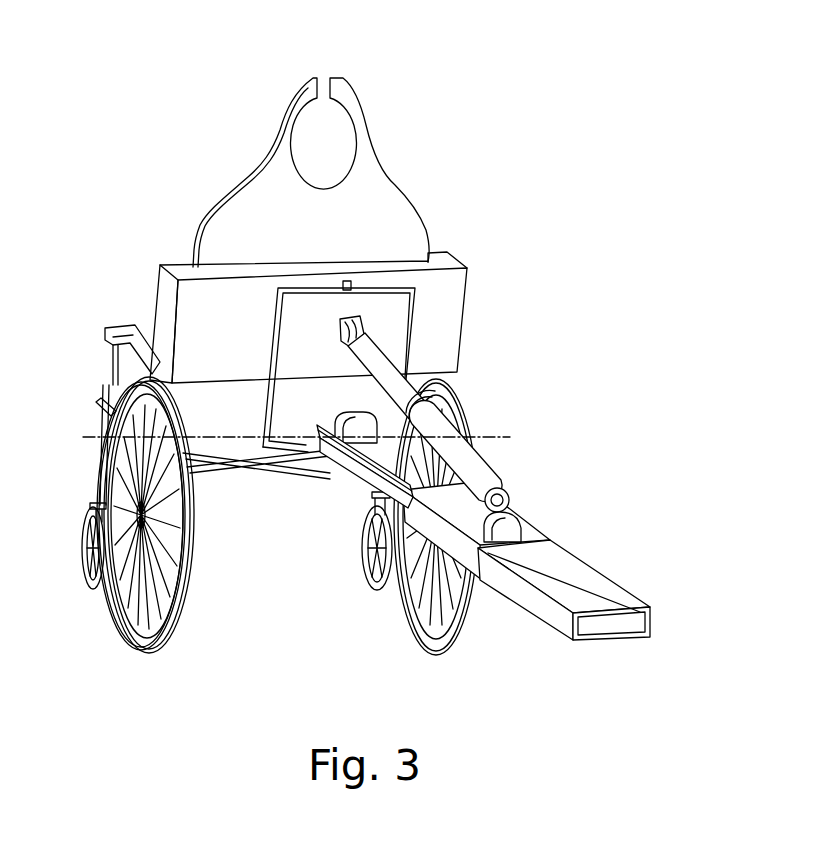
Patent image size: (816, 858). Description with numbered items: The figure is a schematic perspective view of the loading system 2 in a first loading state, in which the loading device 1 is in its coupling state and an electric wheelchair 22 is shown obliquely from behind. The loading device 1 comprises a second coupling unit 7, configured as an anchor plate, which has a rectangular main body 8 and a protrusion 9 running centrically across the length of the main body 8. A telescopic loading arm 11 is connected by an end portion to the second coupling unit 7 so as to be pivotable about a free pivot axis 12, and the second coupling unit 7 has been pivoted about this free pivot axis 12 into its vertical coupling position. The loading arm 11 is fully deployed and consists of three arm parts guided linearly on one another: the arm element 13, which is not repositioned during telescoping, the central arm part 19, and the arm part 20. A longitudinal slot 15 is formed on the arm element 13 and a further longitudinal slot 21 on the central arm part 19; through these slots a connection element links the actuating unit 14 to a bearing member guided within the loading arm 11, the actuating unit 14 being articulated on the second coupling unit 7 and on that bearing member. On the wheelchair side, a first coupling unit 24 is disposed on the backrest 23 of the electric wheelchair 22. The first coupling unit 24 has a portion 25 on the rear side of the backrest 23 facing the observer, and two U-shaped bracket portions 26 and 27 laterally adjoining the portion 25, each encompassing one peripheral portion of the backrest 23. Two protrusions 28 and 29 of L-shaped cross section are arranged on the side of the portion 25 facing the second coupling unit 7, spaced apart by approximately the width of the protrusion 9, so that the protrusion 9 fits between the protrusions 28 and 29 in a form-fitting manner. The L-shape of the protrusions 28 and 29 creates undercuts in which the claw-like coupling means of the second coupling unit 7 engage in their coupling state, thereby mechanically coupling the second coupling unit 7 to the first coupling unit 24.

The loading device 1 is at (404, 540).
The loading system 2 is at (362, 399).
The second coupling unit 7 is at (278, 455).
The main body 8 is at (388, 325).
The protrusion 9 is at (346, 281).
The telescopic loading arm 11 is at (441, 552).
The free pivot axis 12 is at (83, 440).
The arm element 13 is at (556, 622).
The actuating unit 14 is at (475, 429).
The longitudinal slot 15 is at (548, 601).
The central arm part 19 is at (483, 472).
The arm part 20 is at (353, 465).
The longitudinal slot 21 is at (508, 530).
The electric wheelchair 22 is at (293, 184).
The backrest 23 is at (220, 257).
The first coupling unit 24 is at (291, 290).
The portion 25 is at (197, 315).
The bracket portion 26 is at (167, 263).
The bracket portion 27 is at (466, 264).
The protrusion 28 is at (305, 285).
The protrusion 29 is at (372, 288).